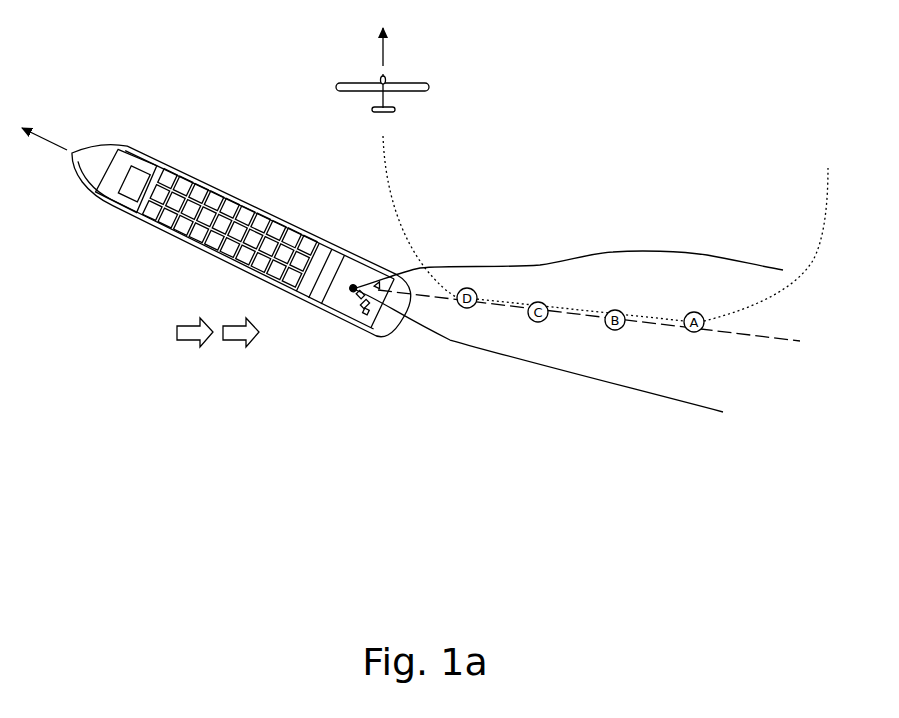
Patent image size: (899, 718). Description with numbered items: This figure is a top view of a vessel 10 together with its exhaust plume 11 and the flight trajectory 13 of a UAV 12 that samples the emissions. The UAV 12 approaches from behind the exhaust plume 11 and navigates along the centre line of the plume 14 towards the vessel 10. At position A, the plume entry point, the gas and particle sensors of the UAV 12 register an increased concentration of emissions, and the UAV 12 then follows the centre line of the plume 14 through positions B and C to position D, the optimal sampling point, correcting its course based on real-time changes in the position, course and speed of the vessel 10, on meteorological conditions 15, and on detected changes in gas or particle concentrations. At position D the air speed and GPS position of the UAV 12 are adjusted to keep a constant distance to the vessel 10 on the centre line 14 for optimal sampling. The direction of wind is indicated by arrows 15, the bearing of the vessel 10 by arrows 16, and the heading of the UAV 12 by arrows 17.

The vessel 10 is at (121, 229).
The exhaust plume 11 is at (643, 363).
The UAV 12 is at (332, 79).
The flight trajectory 13 is at (818, 200).
The centre line of the plume 14 is at (793, 353).
The wind direction arrows 15 is at (181, 348).
The vessel bearing arrows 16 is at (50, 131).
The UAV heading arrows 17 is at (396, 50).